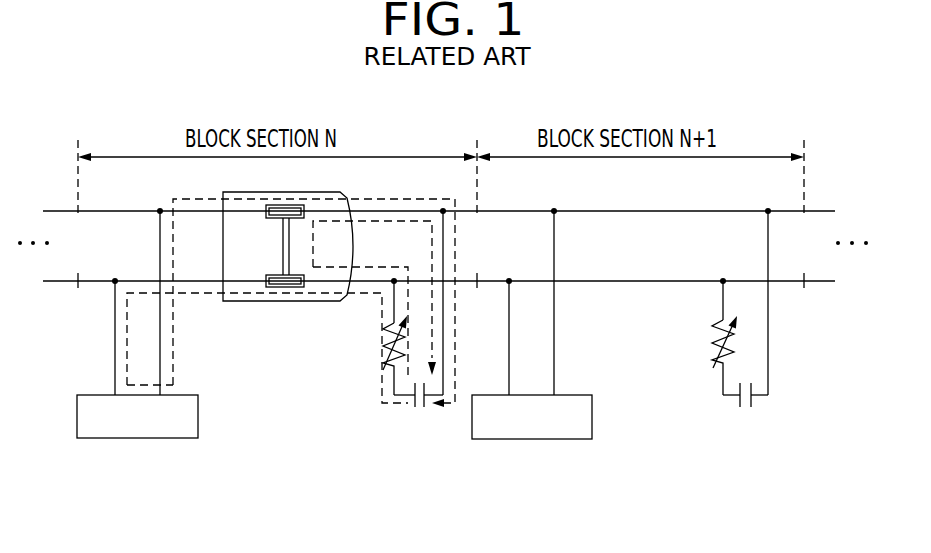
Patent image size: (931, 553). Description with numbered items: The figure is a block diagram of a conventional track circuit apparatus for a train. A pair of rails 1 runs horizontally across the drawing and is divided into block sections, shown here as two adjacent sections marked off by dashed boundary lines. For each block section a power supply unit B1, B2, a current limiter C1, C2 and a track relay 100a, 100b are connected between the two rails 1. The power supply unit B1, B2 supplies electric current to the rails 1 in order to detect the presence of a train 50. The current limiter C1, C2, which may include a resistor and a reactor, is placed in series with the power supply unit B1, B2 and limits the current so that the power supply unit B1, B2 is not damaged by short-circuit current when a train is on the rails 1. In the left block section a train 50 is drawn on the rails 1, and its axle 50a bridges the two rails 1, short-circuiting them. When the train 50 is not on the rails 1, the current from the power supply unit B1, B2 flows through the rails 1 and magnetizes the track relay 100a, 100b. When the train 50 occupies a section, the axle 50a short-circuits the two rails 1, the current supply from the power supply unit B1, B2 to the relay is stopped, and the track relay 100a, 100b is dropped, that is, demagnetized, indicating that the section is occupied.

The rails 1 is at (648, 211).
The train 50 is at (322, 301).
The axle 50a is at (283, 238).
The track relay 100a is at (137, 438).
The track relay 100b is at (532, 439).
The current limiter C1 is at (392, 362).
The power supply unit B1 is at (415, 407).
The current limiter C2 is at (718, 358).
The power supply unit B2 is at (740, 407).